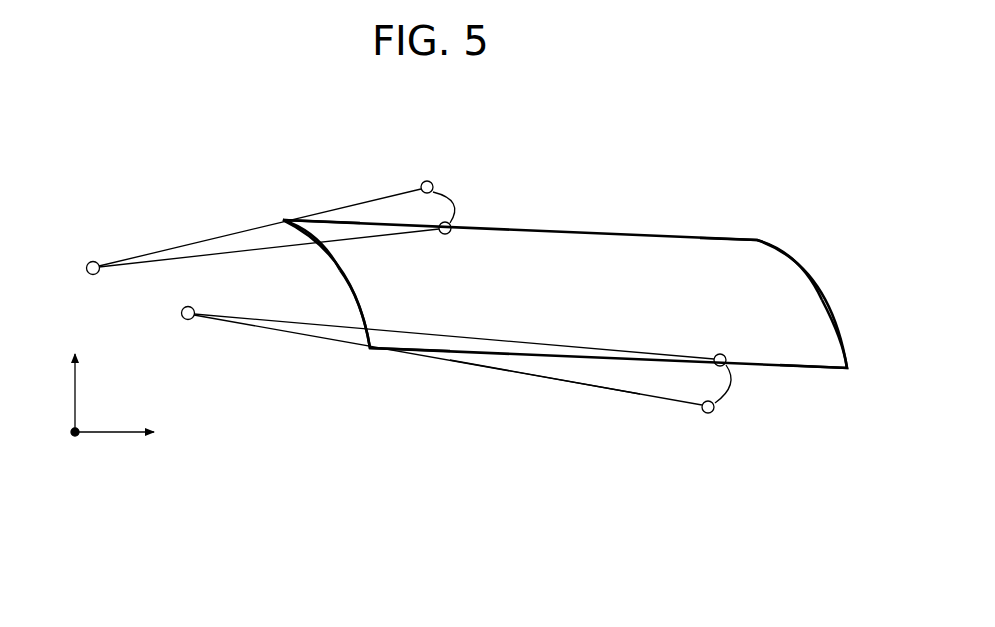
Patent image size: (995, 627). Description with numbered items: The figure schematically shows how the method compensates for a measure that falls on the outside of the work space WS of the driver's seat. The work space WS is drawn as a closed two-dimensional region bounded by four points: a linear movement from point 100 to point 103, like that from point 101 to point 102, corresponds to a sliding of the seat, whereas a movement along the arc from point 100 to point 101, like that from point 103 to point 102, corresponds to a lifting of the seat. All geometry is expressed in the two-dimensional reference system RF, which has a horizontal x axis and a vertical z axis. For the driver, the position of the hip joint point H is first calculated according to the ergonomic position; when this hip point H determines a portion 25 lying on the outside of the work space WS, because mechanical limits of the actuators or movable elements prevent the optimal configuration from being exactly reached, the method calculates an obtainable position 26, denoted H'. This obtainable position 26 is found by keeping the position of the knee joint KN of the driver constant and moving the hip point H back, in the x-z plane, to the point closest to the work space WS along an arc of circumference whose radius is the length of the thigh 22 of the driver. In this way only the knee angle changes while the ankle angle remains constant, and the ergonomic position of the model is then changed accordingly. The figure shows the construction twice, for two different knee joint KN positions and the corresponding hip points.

The thigh 22 is at (570, 386).
The portion lying on the outside of the work space 25 is at (424, 179).
The obtainable position 26 is at (446, 237).
The point of the work space 100 is at (835, 340).
The point of the work space 101 is at (761, 258).
The point of the work space 102 is at (303, 234).
The point of the work space 103 is at (395, 323).
The work space WS is at (698, 212).
The knee joint KN is at (388, 297).
The hip joint point H is at (433, 183).
The reference system RF is at (80, 448).